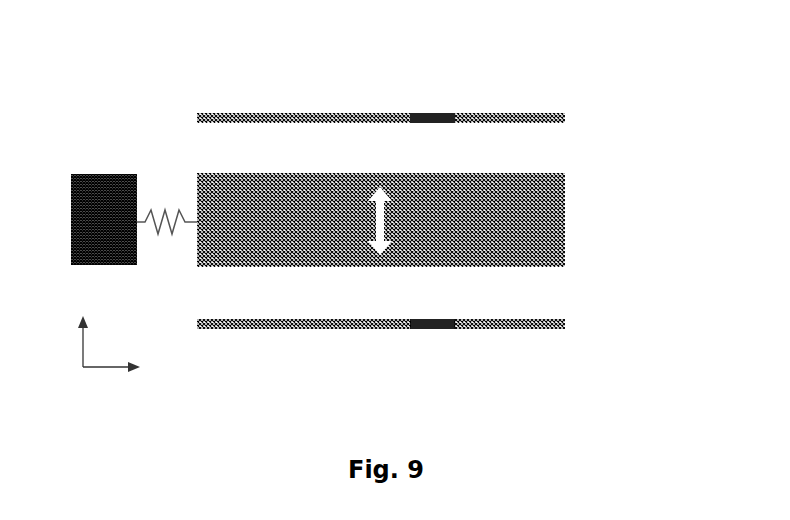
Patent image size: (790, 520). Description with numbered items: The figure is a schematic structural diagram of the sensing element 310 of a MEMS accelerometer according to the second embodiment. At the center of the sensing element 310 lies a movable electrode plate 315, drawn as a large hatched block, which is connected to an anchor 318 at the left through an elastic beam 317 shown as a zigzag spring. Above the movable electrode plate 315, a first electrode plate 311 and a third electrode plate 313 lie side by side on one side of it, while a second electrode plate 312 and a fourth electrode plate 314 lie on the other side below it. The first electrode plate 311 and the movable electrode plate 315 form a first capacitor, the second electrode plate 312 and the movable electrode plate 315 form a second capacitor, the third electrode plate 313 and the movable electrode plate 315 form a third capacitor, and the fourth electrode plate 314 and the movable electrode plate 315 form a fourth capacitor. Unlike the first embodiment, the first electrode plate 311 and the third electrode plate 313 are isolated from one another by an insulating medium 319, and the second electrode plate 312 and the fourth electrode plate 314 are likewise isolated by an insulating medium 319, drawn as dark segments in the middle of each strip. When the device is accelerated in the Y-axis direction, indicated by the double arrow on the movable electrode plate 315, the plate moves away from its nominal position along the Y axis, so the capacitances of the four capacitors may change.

The sensing element 310 is at (95, 46).
The first electrode plate 311 is at (315, 113).
The second electrode plate 312 is at (307, 319).
The third electrode plate 313 is at (530, 113).
The fourth electrode plate 314 is at (517, 329).
The movable electrode plate 315 is at (563, 230).
The elastic beam 317 is at (165, 210).
The anchor 318 is at (108, 253).
The insulating medium 319 is at (437, 113).